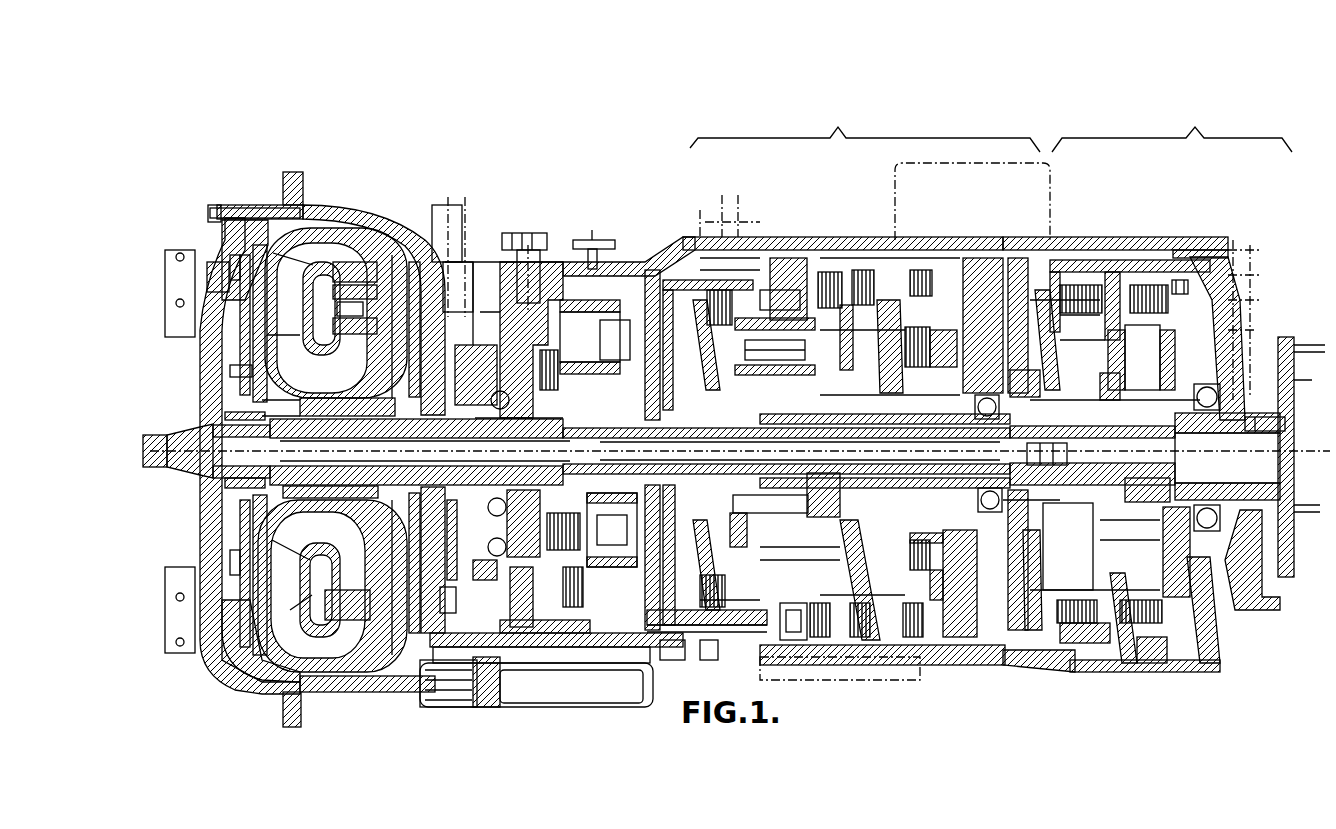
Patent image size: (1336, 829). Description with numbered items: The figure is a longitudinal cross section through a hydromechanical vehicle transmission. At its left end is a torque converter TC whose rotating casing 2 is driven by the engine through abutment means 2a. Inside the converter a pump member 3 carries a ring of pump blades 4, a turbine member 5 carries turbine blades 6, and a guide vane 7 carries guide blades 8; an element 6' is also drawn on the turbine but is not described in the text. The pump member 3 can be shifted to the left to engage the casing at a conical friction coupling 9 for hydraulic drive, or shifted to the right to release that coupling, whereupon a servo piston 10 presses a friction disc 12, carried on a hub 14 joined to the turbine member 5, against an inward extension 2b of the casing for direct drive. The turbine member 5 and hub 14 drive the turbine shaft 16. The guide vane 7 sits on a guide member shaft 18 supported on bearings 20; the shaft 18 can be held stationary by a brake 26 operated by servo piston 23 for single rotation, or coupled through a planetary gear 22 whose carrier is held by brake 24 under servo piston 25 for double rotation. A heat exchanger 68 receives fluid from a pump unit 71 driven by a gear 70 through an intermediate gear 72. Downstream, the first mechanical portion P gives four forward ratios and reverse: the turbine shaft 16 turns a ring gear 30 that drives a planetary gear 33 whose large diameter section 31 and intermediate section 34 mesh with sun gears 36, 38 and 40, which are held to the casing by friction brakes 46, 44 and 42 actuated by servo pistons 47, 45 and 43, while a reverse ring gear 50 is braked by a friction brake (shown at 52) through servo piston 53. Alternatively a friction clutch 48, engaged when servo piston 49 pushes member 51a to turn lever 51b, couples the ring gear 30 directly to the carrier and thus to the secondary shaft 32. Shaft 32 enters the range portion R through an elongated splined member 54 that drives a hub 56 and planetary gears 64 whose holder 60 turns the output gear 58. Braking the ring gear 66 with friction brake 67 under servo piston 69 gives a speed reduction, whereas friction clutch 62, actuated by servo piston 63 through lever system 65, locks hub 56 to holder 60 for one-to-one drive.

The rotating casing 2 is at (315, 222).
The abutment means 2a is at (178, 617).
The inward extension 2b is at (235, 258).
The pump member 3 is at (266, 356).
The pump blades 4 is at (283, 334).
The turbine member 5 is at (288, 519).
The turbine blades 6 is at (315, 445).
The lock-up clutch 6' is at (355, 226).
The guide vane 7 is at (421, 372).
The guide blades 8 is at (368, 280).
The conical friction coupling 9 is at (283, 232).
The servo piston 10 is at (232, 262).
The friction disc 12 is at (235, 292).
The hub 14 is at (258, 372).
The turbine shaft 16 is at (232, 474).
The guide member shaft 18 is at (432, 258).
The bearings 20 is at (498, 507).
The planetary gear 22 is at (622, 336).
The servo piston 23 is at (545, 350).
The brake 24 is at (573, 330).
The servo piston 25 is at (508, 313).
The brake 26 is at (607, 563).
The ring gear 30 is at (740, 325).
The large diameter section 31 is at (758, 293).
The secondary shaft 32 is at (772, 462).
The planetary gear 33 is at (774, 360).
The intermediate diameter section 34 is at (782, 322).
The sun gear 36 is at (712, 437).
The sun gear 38 is at (783, 520).
The sun gear 40 is at (840, 525).
The friction brake 42 is at (863, 317).
The servo piston 43 is at (883, 337).
The friction brake 44 is at (912, 635).
The servo piston 45 is at (970, 635).
The friction brake 46 is at (918, 347).
The servo piston 47 is at (955, 340).
The friction clutch 48 is at (707, 315).
The servo piston 49 is at (1064, 455).
The reverse ring gear 50 is at (830, 317).
The member 51a is at (752, 503).
The lever 51b is at (693, 332).
The brake 52 is at (823, 640).
The servo piston 53 is at (797, 643).
The elongated splined member 54 is at (1153, 493).
The hub 56 is at (1062, 330).
The secondary gear 58 is at (1237, 427).
The holder 60 is at (1177, 397).
The friction clutch 62 is at (1072, 627).
The servo piston 63 is at (1031, 393).
The planetary gears 64 is at (1120, 322).
The lever system 65 is at (1035, 355).
The ring gear 66 is at (1153, 593).
The friction brake 67 is at (1133, 353).
The heat exchanger 68 is at (536, 685).
The servo piston 69 is at (1180, 287).
The gear 70 is at (480, 572).
The pump unit 71 is at (517, 627).
The intermediate gear 72 is at (455, 597).
The first portion P is at (865, 125).
The range gear R is at (1172, 125).
The torque converter TC is at (253, 700).